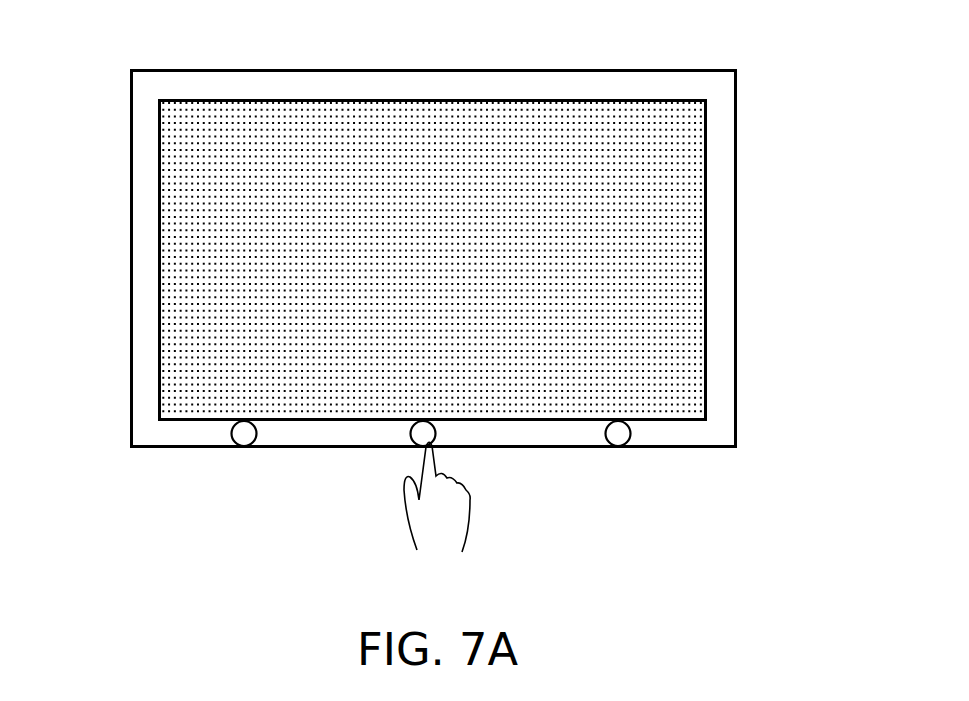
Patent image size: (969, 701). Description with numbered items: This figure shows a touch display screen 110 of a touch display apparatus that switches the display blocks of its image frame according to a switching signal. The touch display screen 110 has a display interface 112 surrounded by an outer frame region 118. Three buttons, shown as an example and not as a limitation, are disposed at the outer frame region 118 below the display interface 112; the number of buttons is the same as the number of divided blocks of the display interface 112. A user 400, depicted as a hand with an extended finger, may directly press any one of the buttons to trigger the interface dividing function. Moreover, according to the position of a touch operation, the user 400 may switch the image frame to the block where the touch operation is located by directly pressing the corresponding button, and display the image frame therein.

The touch display screen 110 is at (478, 274).
The display interface 112 is at (509, 132).
The outer frame region 118 is at (725, 195).
The user 400 is at (447, 520).